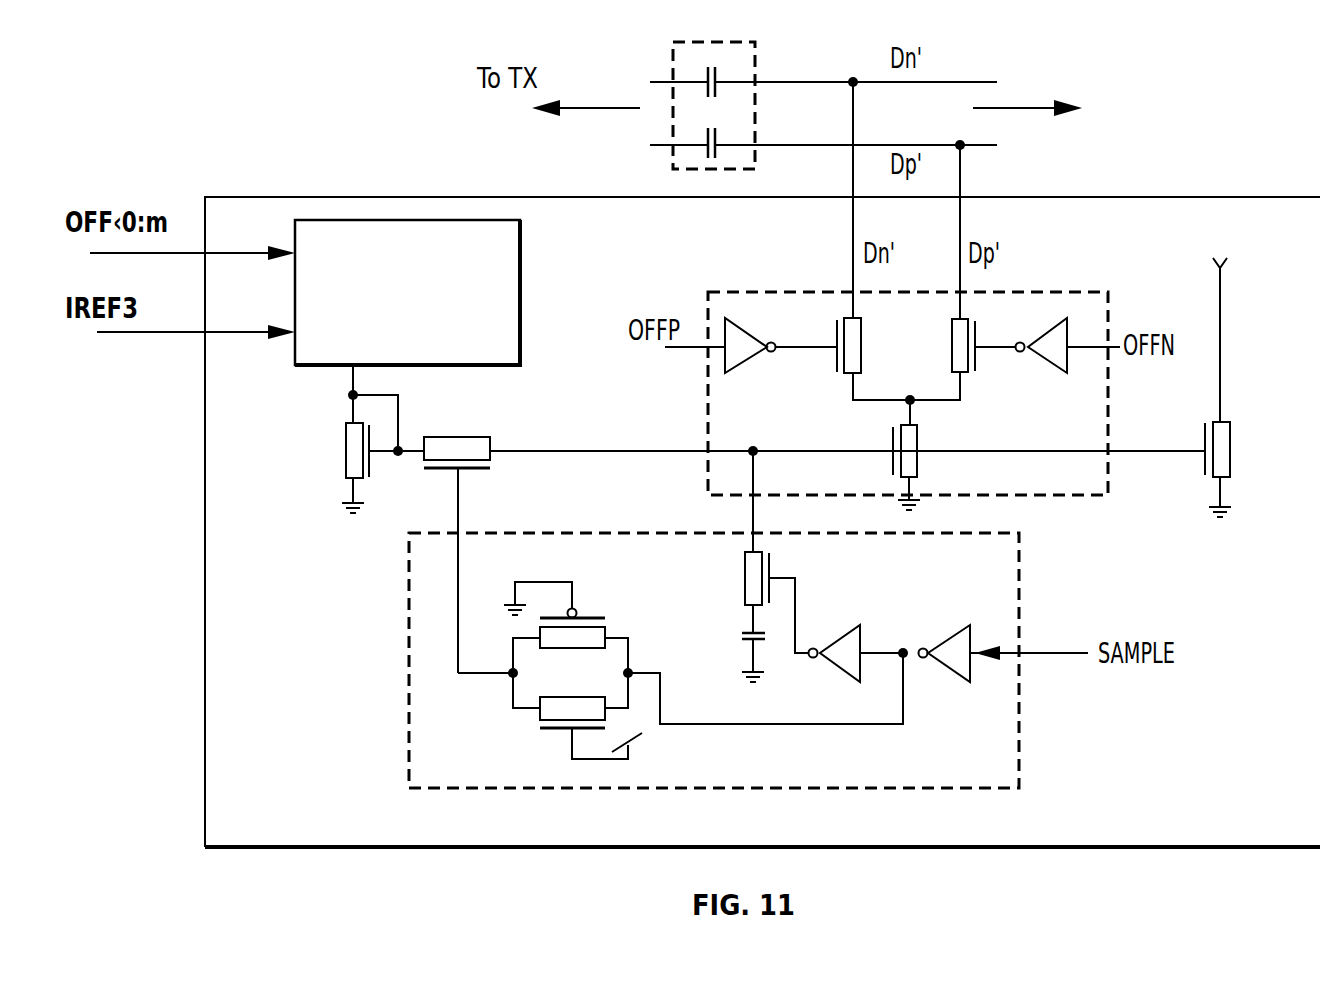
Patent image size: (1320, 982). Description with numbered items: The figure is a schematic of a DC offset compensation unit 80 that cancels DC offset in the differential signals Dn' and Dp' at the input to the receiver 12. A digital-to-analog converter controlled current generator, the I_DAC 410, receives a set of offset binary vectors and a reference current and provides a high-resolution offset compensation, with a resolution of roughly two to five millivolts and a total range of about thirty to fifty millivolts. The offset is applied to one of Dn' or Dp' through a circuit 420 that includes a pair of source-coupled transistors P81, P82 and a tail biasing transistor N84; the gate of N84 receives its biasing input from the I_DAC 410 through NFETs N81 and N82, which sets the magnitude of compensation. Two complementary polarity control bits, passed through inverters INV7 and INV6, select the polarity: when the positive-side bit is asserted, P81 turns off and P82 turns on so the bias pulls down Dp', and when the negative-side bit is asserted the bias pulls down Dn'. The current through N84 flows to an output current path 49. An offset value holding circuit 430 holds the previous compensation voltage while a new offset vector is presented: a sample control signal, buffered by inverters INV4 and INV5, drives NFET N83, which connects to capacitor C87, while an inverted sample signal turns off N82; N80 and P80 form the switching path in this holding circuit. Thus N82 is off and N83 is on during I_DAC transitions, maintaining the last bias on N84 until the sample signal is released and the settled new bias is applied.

The DC offset compensation unit 80 is at (347, 197).
The digital-to-analog converter controlled current generator (I_DAC) 410 is at (512, 337).
The offset polarity circuit 420 is at (740, 292).
The offset value holding circuit 430 is at (408, 660).
The receiver 12 is at (1075, 89).
The output current I OUT 49 is at (1240, 374).
The NFET N81 is at (352, 445).
The NFET N82 is at (465, 447).
The NFET N83 is at (748, 579).
The biasing transistor (tail device) N84 is at (910, 467).
The NMOS transistor N80 is at (550, 710).
The PMOS transistor P80 is at (602, 632).
The source-coupled transistor P81 is at (860, 328).
The source-coupled transistor P82 is at (951, 363).
The capacitor C87 is at (742, 636).
The inverter INV4 is at (957, 667).
The inverter INV5 is at (853, 670).
The inverter INV6 is at (1055, 360).
The inverter INV7 is at (735, 361).